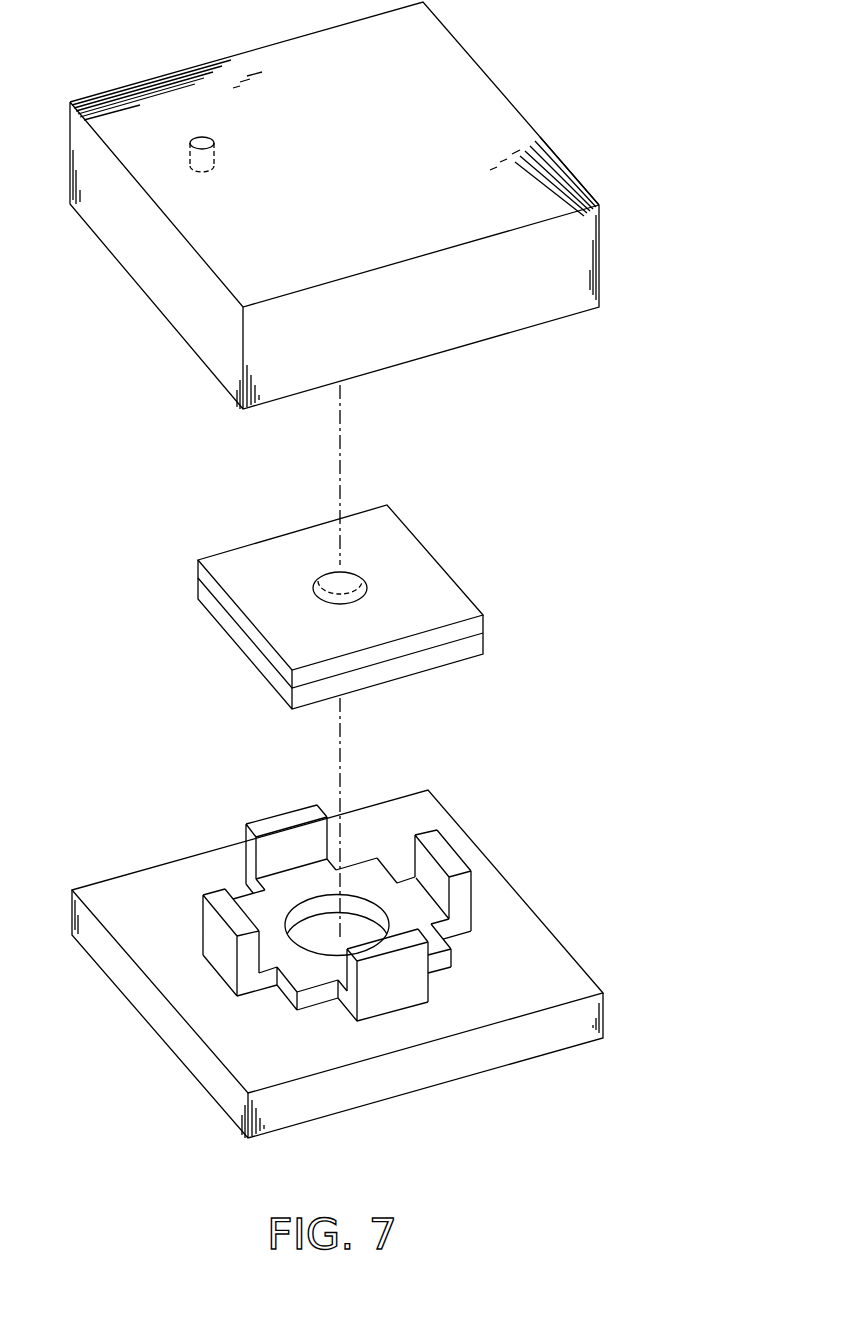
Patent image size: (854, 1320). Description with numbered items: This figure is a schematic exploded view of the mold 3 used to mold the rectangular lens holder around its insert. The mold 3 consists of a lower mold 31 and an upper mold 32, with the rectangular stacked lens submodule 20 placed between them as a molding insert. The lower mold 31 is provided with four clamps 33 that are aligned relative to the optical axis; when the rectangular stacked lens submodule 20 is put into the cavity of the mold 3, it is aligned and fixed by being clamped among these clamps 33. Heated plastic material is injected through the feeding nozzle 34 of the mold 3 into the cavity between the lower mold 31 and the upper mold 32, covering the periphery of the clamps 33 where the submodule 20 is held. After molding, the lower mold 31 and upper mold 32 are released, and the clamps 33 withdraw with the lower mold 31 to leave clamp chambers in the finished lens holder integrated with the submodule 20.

The mold 3 is at (380, 205).
The upper mold 32 is at (503, 147).
The feeding nozzle 34 is at (201, 141).
The rectangular stacked lens submodule 20 is at (427, 582).
The lower mold 31 is at (517, 1045).
The clamps 33 is at (258, 826).